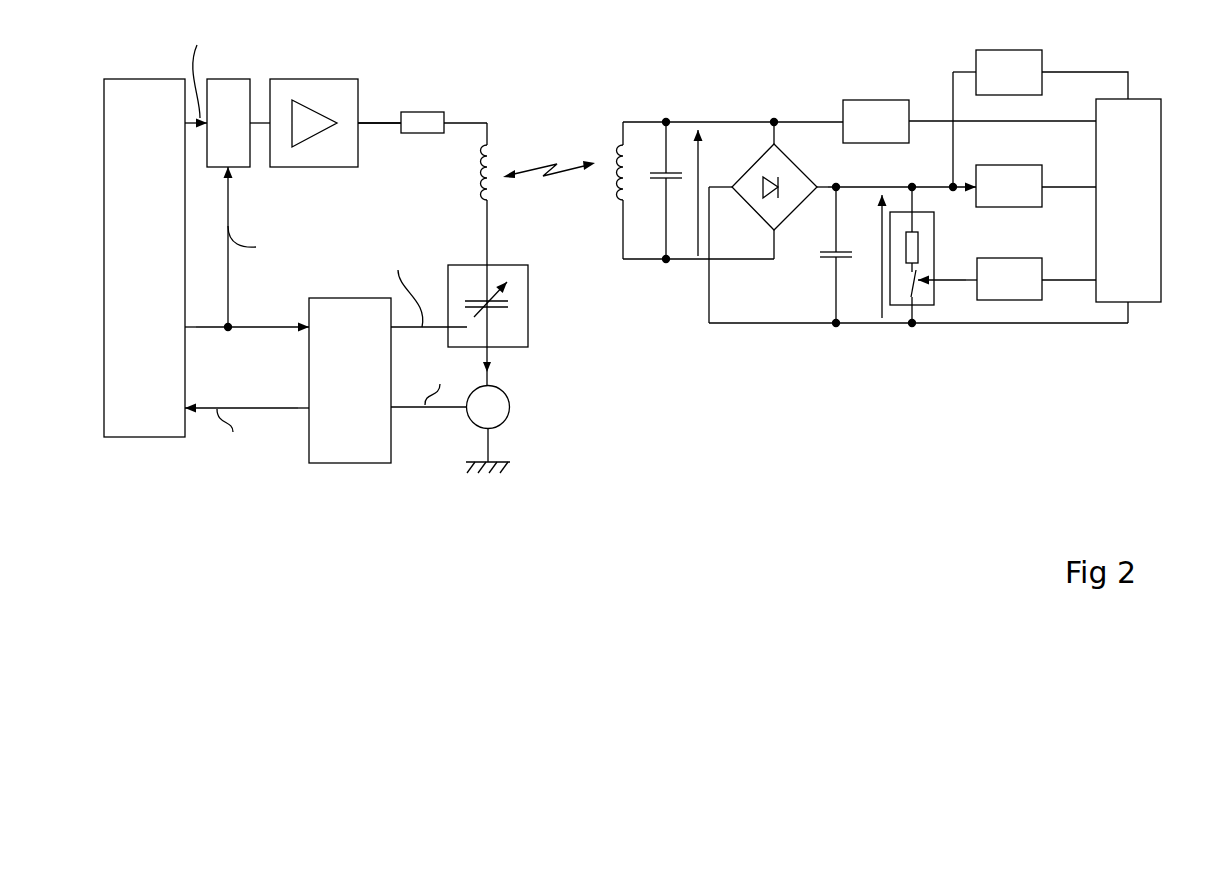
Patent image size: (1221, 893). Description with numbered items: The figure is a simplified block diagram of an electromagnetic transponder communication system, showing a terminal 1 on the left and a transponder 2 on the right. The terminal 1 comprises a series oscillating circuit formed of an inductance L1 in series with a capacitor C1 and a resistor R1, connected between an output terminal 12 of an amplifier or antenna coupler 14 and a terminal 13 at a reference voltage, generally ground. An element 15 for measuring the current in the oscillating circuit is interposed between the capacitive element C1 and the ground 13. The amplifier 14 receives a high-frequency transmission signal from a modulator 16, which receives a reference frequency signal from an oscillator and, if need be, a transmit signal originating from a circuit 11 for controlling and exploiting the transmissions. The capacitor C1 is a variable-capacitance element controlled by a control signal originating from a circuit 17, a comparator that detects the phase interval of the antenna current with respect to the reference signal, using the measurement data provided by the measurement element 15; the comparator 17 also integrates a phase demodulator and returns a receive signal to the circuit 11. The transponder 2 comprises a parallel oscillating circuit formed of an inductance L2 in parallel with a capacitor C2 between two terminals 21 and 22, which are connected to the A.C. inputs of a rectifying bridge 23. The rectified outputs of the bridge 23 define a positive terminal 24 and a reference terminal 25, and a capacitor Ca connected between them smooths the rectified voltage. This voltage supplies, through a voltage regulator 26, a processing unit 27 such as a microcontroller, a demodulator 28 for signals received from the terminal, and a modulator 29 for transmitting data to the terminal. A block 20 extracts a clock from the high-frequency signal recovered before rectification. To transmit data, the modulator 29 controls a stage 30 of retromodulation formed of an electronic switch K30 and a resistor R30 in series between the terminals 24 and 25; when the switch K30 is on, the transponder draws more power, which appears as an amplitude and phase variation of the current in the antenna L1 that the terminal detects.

The terminal 1 is at (272, 500).
The circuit for controlling and exploiting the transmissions 11 is at (140, 79).
The output terminal 12 is at (377, 123).
The terminal at a reference voltage 13 is at (490, 452).
The amplifier or antenna coupler 14 is at (317, 79).
The element for measuring the current 15 is at (510, 412).
The modulator 16 is at (225, 79).
The comparator 17 is at (335, 463).
The transponder 2 is at (803, 430).
The block 20 is at (868, 100).
The terminal 21 is at (666, 121).
The terminal 22 is at (666, 262).
The rectifying bridge 23 is at (795, 165).
The positive terminal 24 is at (838, 183).
The reference terminal 25 is at (837, 326).
The voltage regulator 26 is at (1030, 50).
The processing unit 27 is at (1161, 140).
The demodulator 28 is at (1000, 165).
The modulator 29 is at (1000, 258).
The stage of modulation 30 is at (938, 255).
The resistor R1 is at (422, 109).
The inductance L1 is at (499, 172).
The capacitor C1 is at (488, 306).
The inductance L2 is at (602, 173).
The capacitor C2 is at (672, 190).
The capacitor Ca is at (830, 255).
The resistor R30 is at (918, 250).
The electronic switch K30 is at (915, 297).